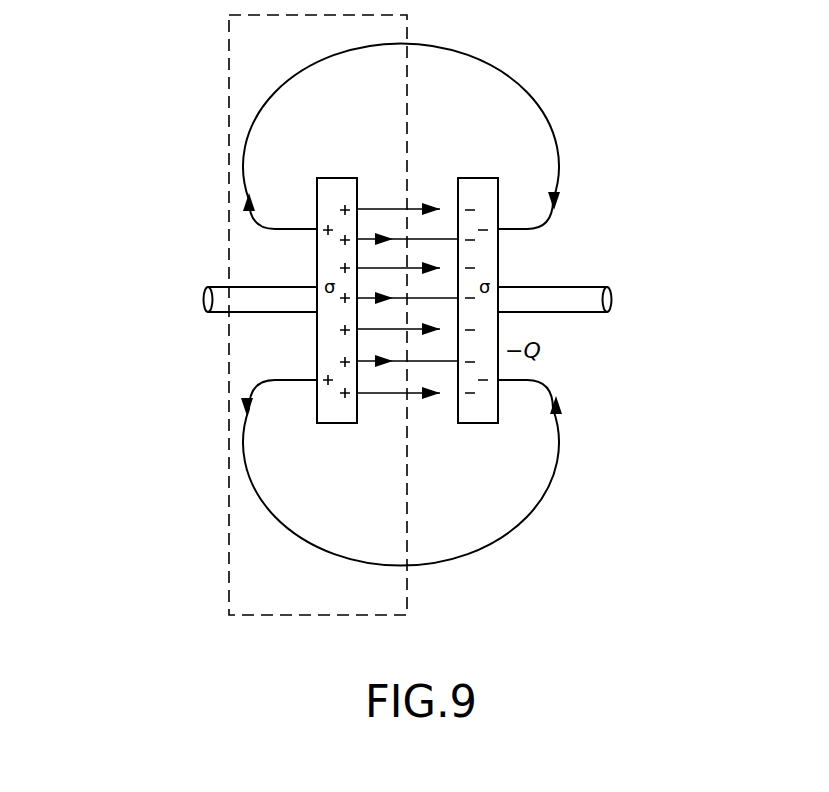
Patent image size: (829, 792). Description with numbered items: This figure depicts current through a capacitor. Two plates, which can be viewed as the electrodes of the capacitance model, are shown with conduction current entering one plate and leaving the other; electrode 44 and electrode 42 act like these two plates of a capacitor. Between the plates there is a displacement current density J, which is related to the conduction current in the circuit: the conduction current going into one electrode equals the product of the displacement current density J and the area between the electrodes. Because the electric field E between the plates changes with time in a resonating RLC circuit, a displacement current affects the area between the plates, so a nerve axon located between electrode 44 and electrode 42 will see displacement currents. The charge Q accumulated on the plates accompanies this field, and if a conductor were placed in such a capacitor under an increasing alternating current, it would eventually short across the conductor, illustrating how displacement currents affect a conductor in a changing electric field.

The electrode 44 is at (197, 300).
The electrode 42 is at (617, 300).
The charge on positive plate Q is at (324, 300).
The electric field between plates E is at (407, 301).
The displacement current density J is at (401, 304).